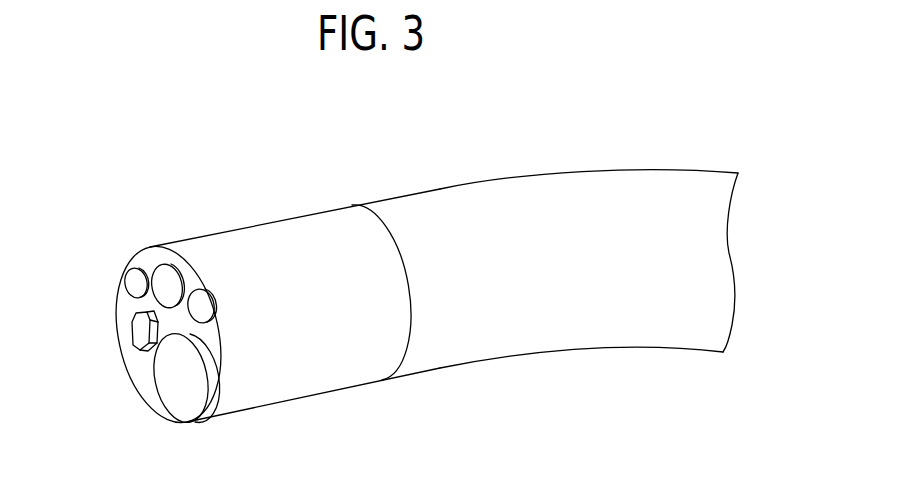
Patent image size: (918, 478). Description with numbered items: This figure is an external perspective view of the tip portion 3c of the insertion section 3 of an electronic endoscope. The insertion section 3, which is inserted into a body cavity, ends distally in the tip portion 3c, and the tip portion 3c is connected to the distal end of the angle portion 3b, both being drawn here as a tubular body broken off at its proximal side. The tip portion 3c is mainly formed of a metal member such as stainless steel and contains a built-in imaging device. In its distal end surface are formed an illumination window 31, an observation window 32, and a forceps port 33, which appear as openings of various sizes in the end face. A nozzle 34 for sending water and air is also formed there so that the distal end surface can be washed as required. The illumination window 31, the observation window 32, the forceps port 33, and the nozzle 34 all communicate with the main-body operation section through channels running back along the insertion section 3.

The insertion section 3 is at (409, 262).
The angle portion 3b is at (545, 330).
The tip portion 3c is at (305, 380).
The illumination window 31 is at (134, 280).
The observation window 32 is at (167, 282).
The forceps port 33 is at (168, 388).
The nozzle 34 is at (142, 340).